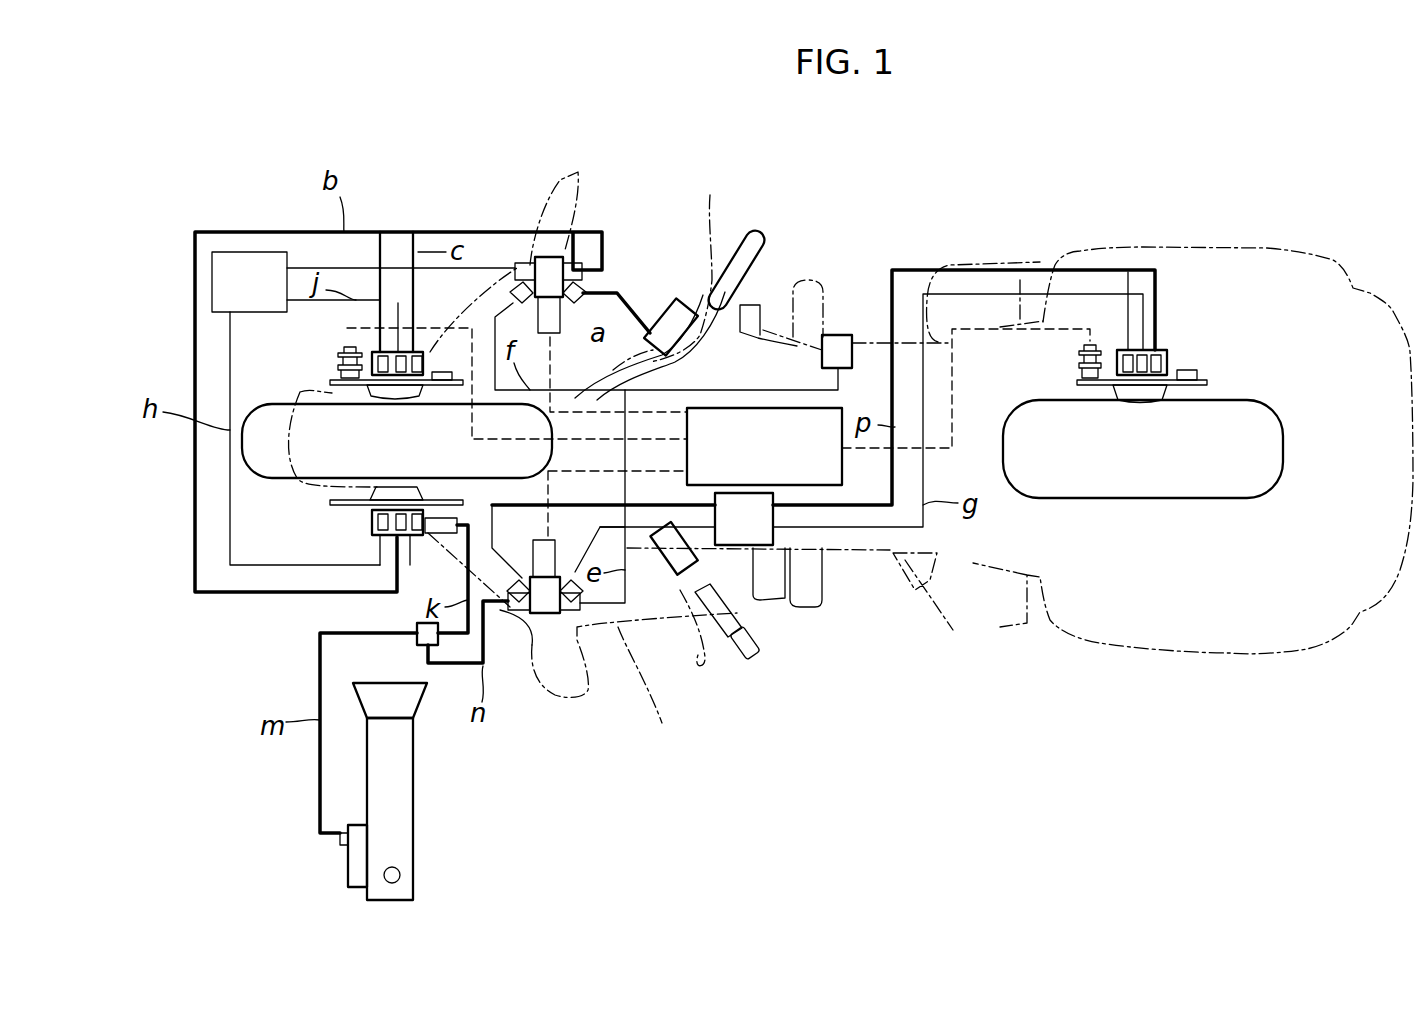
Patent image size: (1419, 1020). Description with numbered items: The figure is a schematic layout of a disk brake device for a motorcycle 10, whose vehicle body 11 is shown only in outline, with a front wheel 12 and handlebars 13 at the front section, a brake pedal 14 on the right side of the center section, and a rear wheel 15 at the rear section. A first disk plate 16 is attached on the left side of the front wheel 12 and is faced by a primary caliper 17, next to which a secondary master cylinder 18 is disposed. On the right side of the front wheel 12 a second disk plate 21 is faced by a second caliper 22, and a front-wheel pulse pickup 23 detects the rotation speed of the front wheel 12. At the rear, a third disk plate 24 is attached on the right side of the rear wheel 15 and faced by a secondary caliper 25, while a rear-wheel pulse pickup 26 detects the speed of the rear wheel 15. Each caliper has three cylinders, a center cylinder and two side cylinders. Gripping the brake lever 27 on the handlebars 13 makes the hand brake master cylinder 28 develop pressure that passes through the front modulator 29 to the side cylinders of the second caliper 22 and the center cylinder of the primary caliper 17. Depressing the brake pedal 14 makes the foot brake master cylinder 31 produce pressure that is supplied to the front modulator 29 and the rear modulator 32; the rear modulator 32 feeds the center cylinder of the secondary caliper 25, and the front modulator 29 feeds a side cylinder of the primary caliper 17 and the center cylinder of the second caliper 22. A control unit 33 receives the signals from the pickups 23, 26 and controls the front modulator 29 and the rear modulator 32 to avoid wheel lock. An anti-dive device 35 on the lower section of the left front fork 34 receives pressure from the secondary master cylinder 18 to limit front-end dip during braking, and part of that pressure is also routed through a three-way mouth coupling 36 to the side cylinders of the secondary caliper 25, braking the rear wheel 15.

The motorcycle 10 is at (1005, 804).
The vehicle body 11 is at (1015, 505).
The front wheel 12 is at (242, 453).
The handlebars 13 is at (757, 657).
The brake pedal 14 is at (810, 280).
The rear wheel 15 is at (1190, 498).
The first disk plate 16 is at (330, 503).
The primary caliper 17 is at (372, 532).
The secondary master cylinder 18 is at (457, 533).
The second disk plate 21 is at (330, 383).
The second caliper 22 is at (372, 352).
The front-wheel pulse pickup 23 is at (338, 357).
The third disk plate 24 is at (1207, 382).
The secondary caliper 25 is at (1167, 358).
The rear-wheel pulse pickup 26 is at (1080, 362).
The brake lever 27 is at (710, 195).
The hand brake master cylinder 28 is at (662, 305).
The front modulator 29 is at (540, 257).
The foot brake master cylinder 31 is at (838, 335).
The rear modulator 32 is at (547, 618).
The control unit 33 is at (828, 487).
The left front fork 34 is at (413, 800).
The anti-dive device 35 is at (348, 866).
The three-way mouth coupling 36 is at (417, 643).